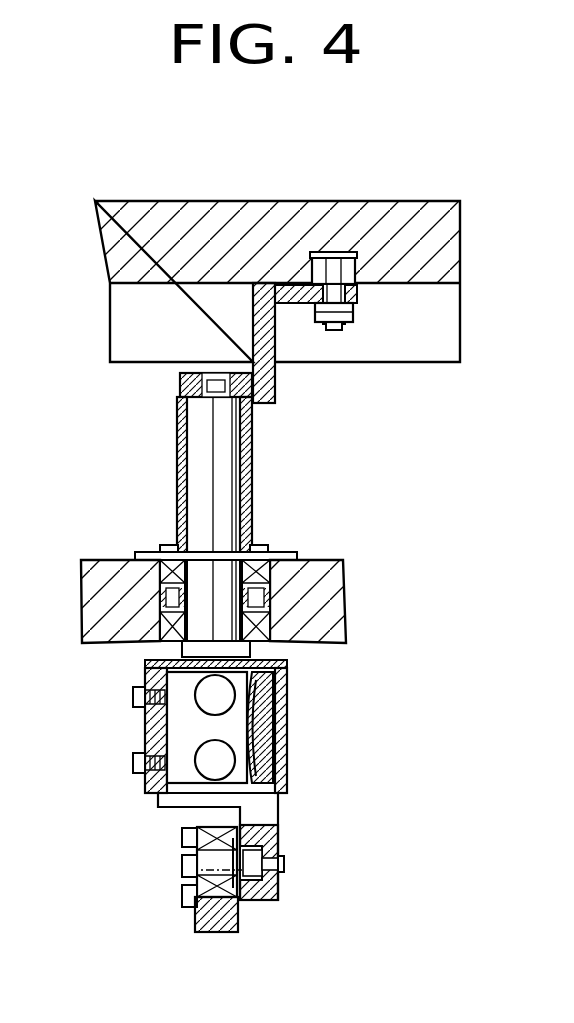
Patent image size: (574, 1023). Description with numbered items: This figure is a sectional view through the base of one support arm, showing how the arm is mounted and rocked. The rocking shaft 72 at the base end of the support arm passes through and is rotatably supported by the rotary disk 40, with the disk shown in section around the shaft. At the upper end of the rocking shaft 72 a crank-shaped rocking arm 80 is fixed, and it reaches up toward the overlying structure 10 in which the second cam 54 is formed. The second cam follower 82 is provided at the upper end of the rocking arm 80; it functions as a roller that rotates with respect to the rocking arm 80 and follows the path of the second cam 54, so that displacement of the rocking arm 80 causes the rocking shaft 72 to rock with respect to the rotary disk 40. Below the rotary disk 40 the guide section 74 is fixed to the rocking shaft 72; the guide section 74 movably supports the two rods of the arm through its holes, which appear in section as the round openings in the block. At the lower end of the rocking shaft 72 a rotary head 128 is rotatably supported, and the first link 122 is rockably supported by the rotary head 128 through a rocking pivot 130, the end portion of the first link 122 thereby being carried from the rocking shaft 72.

The upper frame plate 10 is at (198, 213).
The second cam 54 is at (332, 257).
The second cam follower 82 is at (355, 270).
The rocking arm 80 is at (276, 373).
The rocking shaft 72 is at (253, 470).
The rotary disk 40 is at (335, 603).
The guide section 74 is at (288, 740).
The rocking pivot 130 is at (182, 866).
The rotary head 128 is at (279, 890).
The first link 122 is at (222, 922).